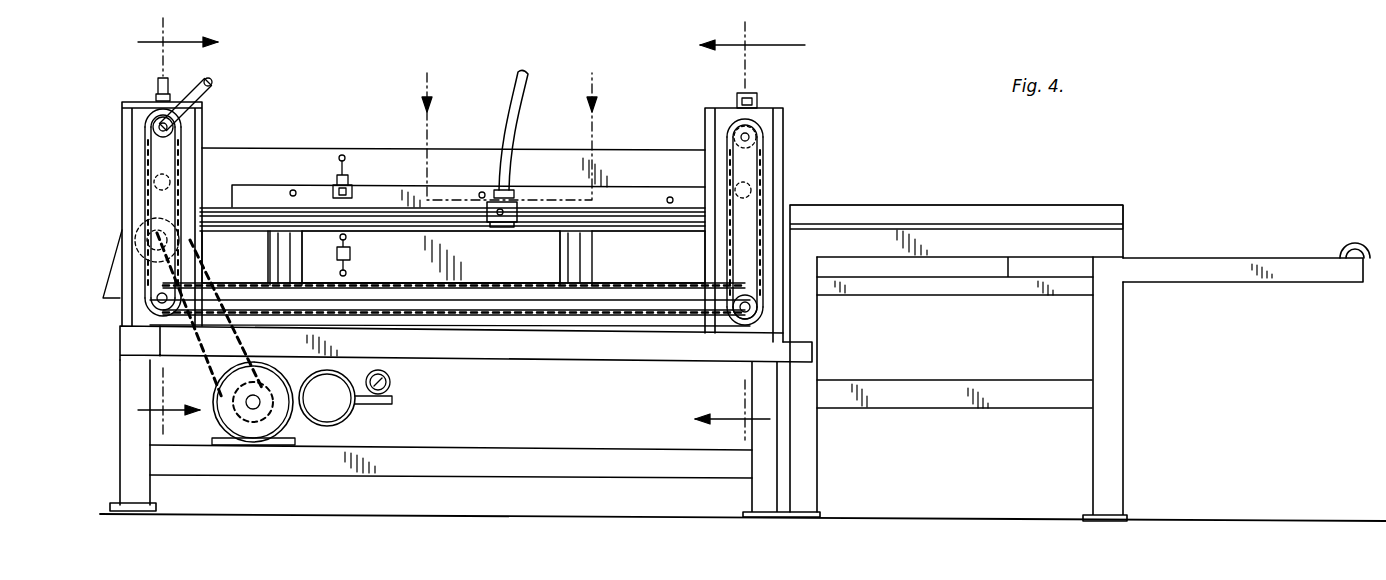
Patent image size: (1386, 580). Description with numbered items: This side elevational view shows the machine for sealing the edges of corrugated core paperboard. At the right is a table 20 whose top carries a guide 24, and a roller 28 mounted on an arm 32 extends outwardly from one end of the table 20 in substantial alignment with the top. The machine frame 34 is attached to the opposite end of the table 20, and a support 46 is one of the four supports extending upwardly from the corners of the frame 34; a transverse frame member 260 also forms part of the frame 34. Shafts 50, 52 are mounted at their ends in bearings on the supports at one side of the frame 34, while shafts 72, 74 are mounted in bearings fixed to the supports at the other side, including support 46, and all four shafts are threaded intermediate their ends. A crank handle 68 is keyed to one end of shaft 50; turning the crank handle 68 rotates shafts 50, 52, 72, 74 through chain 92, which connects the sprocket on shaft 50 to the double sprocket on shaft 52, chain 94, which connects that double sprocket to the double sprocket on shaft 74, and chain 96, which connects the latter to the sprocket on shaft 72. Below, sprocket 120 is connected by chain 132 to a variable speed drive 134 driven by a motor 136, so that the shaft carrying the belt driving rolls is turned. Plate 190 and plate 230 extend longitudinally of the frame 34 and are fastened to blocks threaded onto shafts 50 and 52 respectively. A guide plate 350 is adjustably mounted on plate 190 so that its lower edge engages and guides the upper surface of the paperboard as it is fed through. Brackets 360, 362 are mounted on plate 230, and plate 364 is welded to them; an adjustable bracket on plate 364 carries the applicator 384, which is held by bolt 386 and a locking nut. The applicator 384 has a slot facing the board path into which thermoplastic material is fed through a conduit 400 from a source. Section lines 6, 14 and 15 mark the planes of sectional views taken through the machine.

The section line 14- 14 is at (178, 231).
The section line 15- 15 is at (750, 235).
The section line 6- 6 is at (508, 127).
The table 20 is at (1133, 193).
The guide 24 is at (978, 205).
The roller 28 is at (1352, 229).
The arm 32 is at (1224, 284).
The machine frame 34 is at (624, 376).
The support 46 is at (784, 121).
The shaft 50 is at (143, 104).
The shaft 52 is at (466, 344).
The crank handle 68 is at (212, 80).
The shaft 72 is at (197, 114).
The shaft 74 is at (753, 316).
The chain 92 is at (178, 165).
The chain 94 is at (536, 320).
The chain 96 is at (762, 196).
The sprocket 120 is at (170, 242).
The chain 132 is at (205, 372).
The variable speed drive 134 is at (238, 447).
The motor 136 is at (342, 424).
The plate 190 is at (693, 150).
The plate 230 is at (467, 277).
The transverse frame member 260 is at (762, 97).
The guide plate 350 is at (660, 184).
The bracket 360 is at (558, 254).
The bracket 362 is at (274, 266).
The plate 364 is at (634, 231).
The applicator 384 is at (482, 192).
The bolt 386 is at (506, 208).
The conduit 400 is at (516, 82).